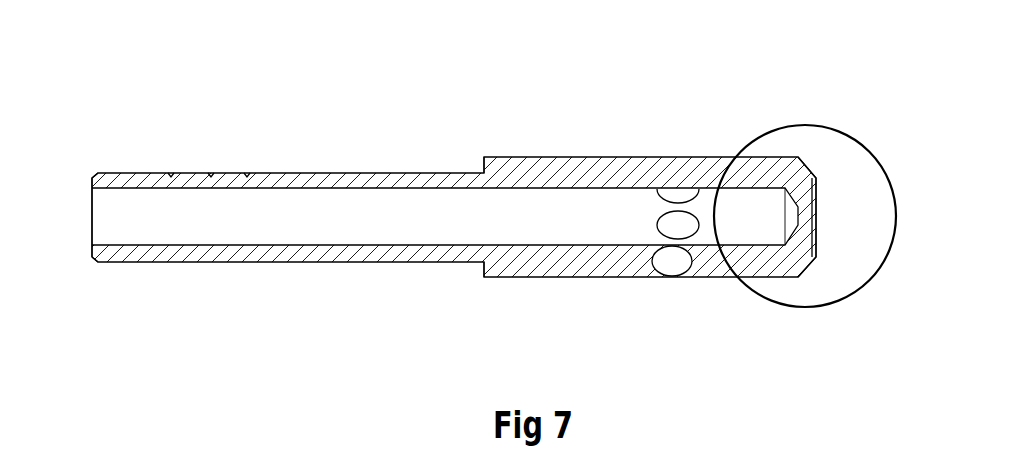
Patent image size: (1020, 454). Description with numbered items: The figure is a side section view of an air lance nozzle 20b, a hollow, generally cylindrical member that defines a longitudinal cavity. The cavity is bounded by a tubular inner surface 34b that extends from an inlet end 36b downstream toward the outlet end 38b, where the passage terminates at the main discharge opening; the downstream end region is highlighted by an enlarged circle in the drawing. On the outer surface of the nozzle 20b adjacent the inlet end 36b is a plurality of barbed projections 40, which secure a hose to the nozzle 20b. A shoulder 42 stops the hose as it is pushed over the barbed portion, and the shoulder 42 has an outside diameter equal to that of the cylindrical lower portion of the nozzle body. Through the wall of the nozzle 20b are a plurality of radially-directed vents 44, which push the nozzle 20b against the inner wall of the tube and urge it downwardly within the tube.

The air lance nozzle 20b is at (362, 131).
The tubular inner surface 34b is at (520, 190).
The inlet end 36b is at (91, 185).
The outlet end 38b is at (818, 176).
The barbed projections 40 is at (171, 174).
The shoulder 42 is at (483, 265).
The radially-directed vents 44 is at (648, 263).